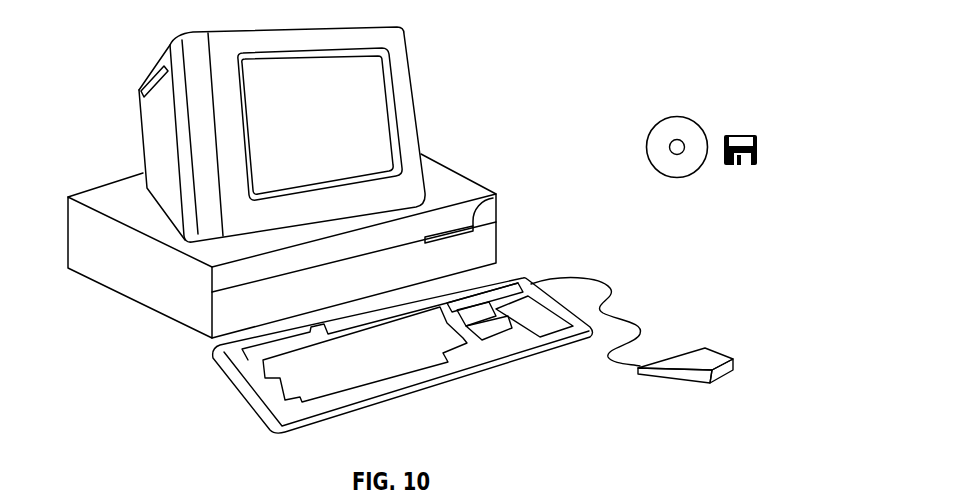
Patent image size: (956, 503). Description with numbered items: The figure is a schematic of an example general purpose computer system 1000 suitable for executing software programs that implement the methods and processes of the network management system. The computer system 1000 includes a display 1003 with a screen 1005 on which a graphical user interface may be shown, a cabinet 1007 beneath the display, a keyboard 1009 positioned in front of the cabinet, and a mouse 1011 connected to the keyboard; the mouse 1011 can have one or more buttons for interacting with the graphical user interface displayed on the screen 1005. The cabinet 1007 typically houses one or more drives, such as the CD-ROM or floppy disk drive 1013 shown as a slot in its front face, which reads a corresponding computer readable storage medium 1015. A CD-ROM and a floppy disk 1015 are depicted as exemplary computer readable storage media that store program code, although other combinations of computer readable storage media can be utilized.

The general purpose computer system 1000 is at (602, 54).
The display 1003 is at (419, 138).
The screen 1005 is at (385, 77).
The cabinet 1007 is at (176, 321).
The keyboard 1009 is at (407, 395).
The mouse 1011 is at (723, 350).
The CD-ROM or floppy disk drive 1013 is at (497, 194).
The computer readable storage medium 1015 is at (722, 101).